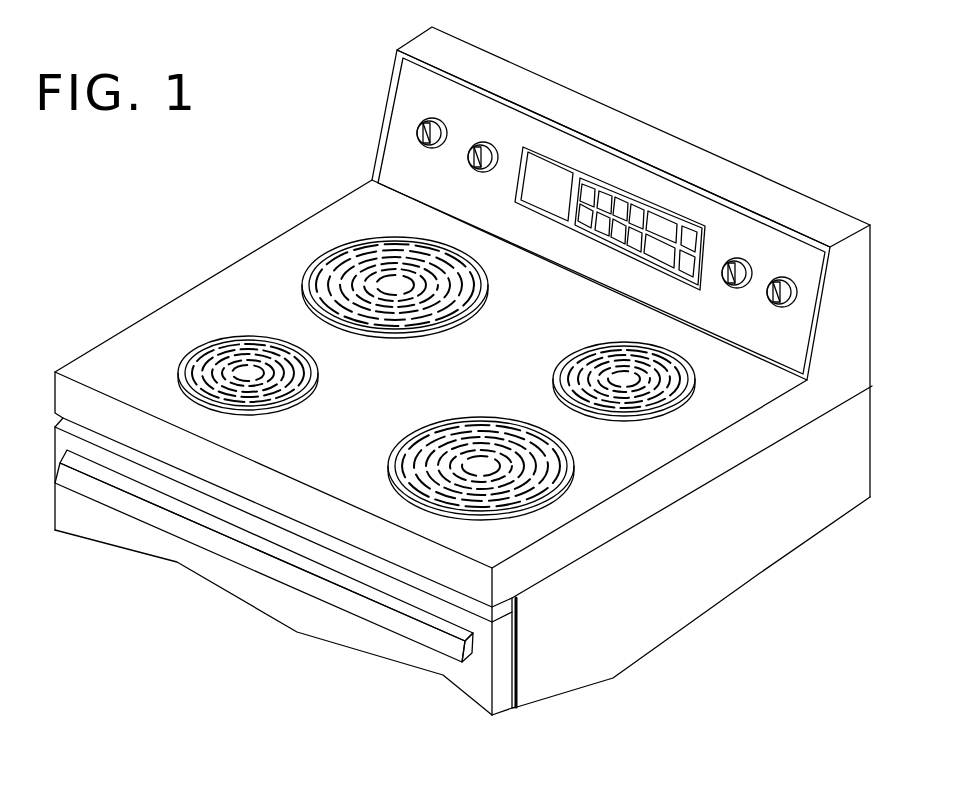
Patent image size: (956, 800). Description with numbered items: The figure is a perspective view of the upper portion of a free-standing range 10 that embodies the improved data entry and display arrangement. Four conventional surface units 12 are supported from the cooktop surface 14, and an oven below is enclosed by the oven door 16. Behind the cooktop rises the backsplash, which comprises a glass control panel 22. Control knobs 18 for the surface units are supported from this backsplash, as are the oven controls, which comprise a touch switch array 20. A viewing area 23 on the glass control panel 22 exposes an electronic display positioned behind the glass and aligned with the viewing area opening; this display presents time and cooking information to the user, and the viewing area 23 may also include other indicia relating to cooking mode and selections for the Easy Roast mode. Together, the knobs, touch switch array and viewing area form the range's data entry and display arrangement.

The free-standing range 10 is at (463, 447).
The surface units 12 is at (573, 370).
The cooktop surface 14 is at (630, 463).
The oven door 16 is at (481, 662).
The control knobs 18 is at (432, 148).
The touch switch array 20 is at (638, 178).
The glass control panel 22 is at (492, 118).
The viewing area 23 is at (548, 173).